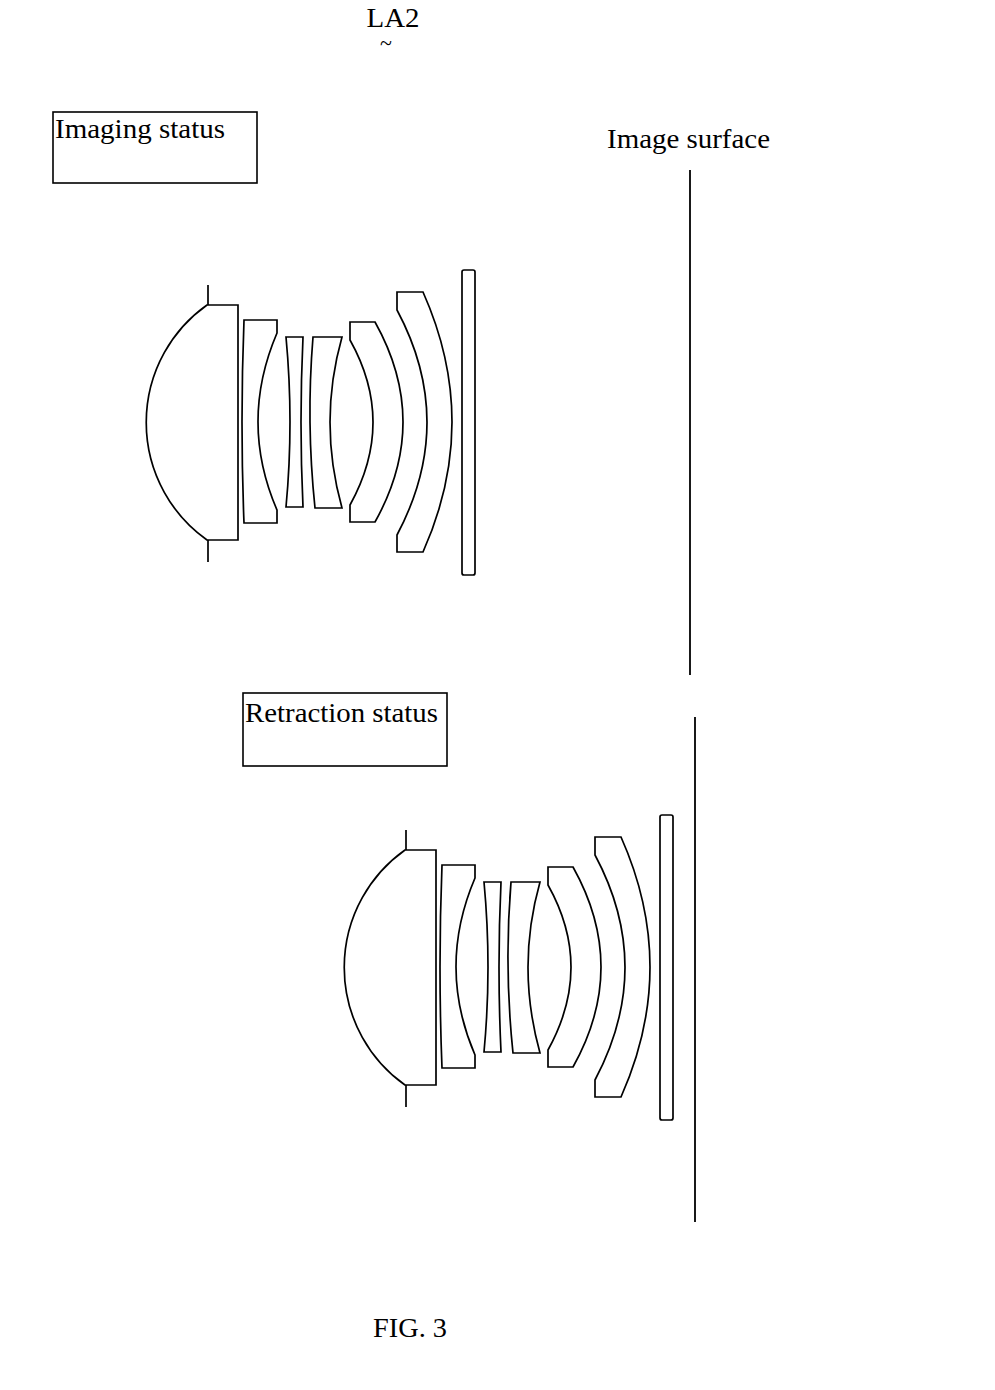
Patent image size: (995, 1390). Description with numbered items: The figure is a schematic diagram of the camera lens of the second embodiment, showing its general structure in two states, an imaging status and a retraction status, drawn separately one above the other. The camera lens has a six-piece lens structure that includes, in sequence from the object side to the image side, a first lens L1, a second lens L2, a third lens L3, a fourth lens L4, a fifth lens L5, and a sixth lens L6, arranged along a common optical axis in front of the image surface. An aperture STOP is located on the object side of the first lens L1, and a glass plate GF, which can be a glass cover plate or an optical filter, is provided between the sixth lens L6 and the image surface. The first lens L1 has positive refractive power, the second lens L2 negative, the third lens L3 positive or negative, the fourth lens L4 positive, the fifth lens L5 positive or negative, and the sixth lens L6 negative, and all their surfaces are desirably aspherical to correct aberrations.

The first lens L1 is at (192, 413).
The second lens L2 is at (259, 404).
The third lens L3 is at (294, 407).
The fourth lens L4 is at (326, 408).
The fifth lens L5 is at (376, 407).
The sixth lens L6 is at (424, 410).
The glass plate GF is at (471, 404).
The aperture STOP is at (205, 436).